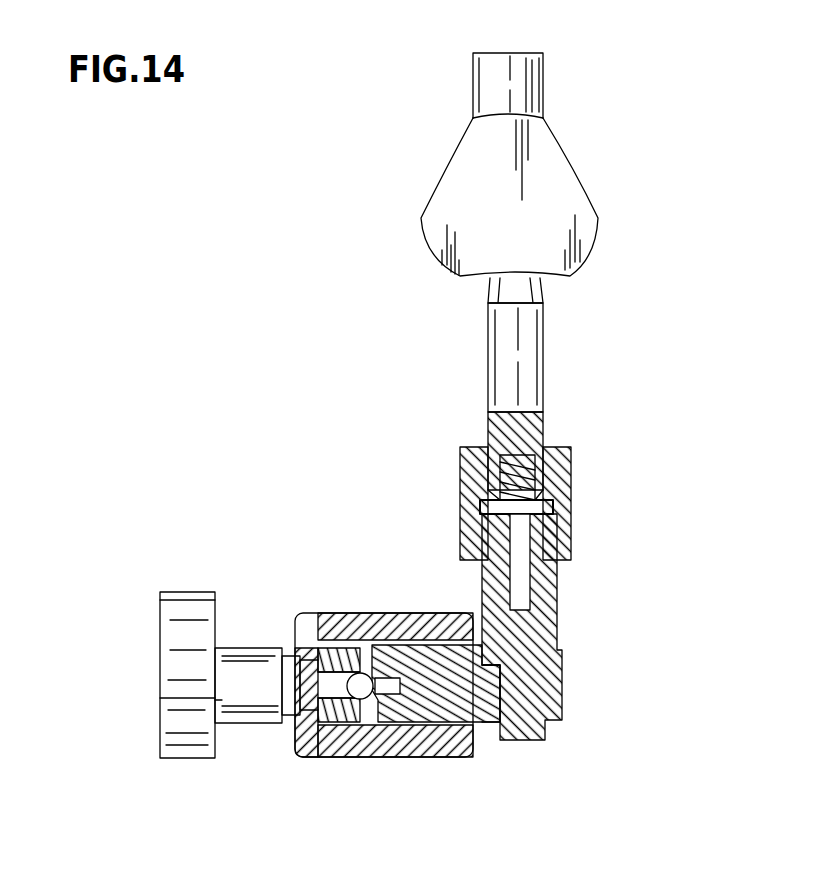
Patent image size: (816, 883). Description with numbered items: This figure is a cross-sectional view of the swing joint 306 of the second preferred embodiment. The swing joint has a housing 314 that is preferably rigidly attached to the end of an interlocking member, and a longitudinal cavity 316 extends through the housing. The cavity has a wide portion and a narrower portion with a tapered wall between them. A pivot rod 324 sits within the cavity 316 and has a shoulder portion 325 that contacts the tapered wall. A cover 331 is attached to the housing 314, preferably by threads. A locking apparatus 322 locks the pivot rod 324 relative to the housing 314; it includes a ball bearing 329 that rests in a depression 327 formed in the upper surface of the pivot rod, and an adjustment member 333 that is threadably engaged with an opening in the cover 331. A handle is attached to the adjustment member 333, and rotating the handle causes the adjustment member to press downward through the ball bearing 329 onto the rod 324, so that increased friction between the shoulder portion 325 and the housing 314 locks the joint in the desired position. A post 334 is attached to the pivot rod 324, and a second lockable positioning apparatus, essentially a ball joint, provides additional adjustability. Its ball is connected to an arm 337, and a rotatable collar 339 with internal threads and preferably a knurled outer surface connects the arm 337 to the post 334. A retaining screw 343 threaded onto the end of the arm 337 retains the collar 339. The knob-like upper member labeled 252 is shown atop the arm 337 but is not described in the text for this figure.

The handle knob 252 is at (484, 90).
The arm 337 is at (530, 380).
The rotatable collar 339 is at (560, 470).
The retaining screw 343 is at (553, 512).
The post 334 is at (543, 650).
The swing joint 306 is at (373, 586).
The housing 314 is at (421, 612).
The cover 331 is at (305, 758).
The longitudinal cavity 316 is at (458, 758).
The shoulder portion 325 is at (407, 758).
The pivot rod 324 is at (490, 742).
The adjustment member 333 is at (297, 655).
The ball bearing 329 is at (333, 618).
The depression 327 is at (375, 758).
The locking apparatus 322 is at (252, 745).